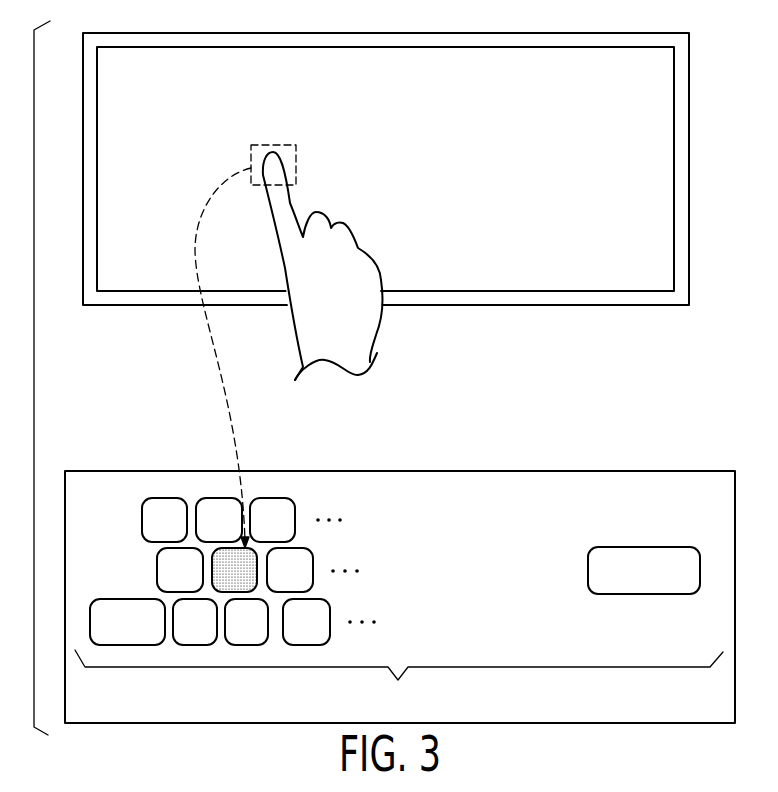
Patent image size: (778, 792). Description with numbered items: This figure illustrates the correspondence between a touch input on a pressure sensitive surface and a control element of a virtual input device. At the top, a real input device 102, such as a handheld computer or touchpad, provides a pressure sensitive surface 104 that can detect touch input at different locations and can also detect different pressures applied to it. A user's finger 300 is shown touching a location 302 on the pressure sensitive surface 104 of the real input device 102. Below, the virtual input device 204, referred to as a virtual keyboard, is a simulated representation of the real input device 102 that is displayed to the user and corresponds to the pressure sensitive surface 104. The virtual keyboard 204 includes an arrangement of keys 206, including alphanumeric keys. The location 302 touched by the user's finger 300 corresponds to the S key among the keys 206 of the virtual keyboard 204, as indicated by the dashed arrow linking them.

The real input device 102 is at (571, 33).
The pressure sensitive surface 104 is at (608, 280).
The virtual input device 204 is at (651, 471).
The keys 206 is at (399, 605).
The user's finger 300 is at (291, 203).
The location 302 is at (272, 145).